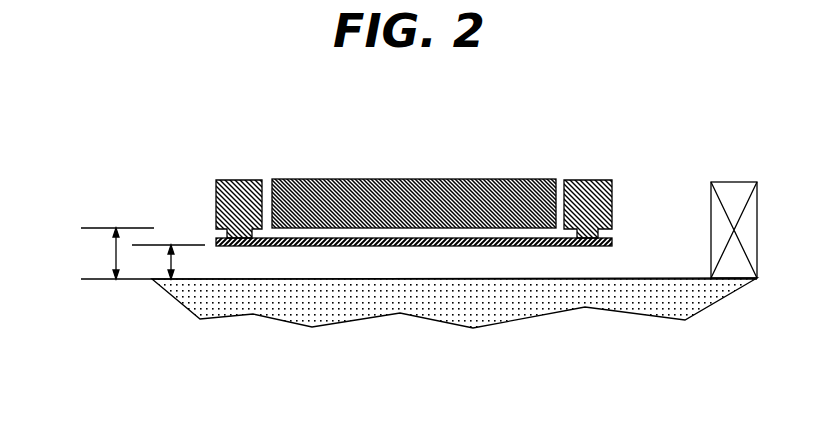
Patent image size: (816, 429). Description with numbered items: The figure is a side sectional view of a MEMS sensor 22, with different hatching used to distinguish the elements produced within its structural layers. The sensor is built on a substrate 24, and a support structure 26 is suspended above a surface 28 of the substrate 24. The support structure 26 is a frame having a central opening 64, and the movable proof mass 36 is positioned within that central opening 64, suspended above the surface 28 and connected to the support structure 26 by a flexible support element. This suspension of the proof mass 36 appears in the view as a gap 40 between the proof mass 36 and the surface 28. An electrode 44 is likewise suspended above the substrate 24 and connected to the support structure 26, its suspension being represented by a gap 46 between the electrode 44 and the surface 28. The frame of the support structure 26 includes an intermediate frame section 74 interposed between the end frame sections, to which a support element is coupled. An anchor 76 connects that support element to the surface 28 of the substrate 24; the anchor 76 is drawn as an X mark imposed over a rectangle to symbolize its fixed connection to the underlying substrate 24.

The MEMS sensor 22 is at (448, 422).
The substrate 24 is at (712, 300).
The support structure 26 is at (220, 181).
The surface 28 is at (624, 282).
The proof mass 36 is at (388, 180).
The gap 40 is at (115, 255).
The electrode 44 is at (282, 246).
The gap 46 is at (167, 259).
The central opening 64 is at (266, 181).
The intermediate frame section 74 is at (216, 192).
The anchor 76 is at (728, 183).